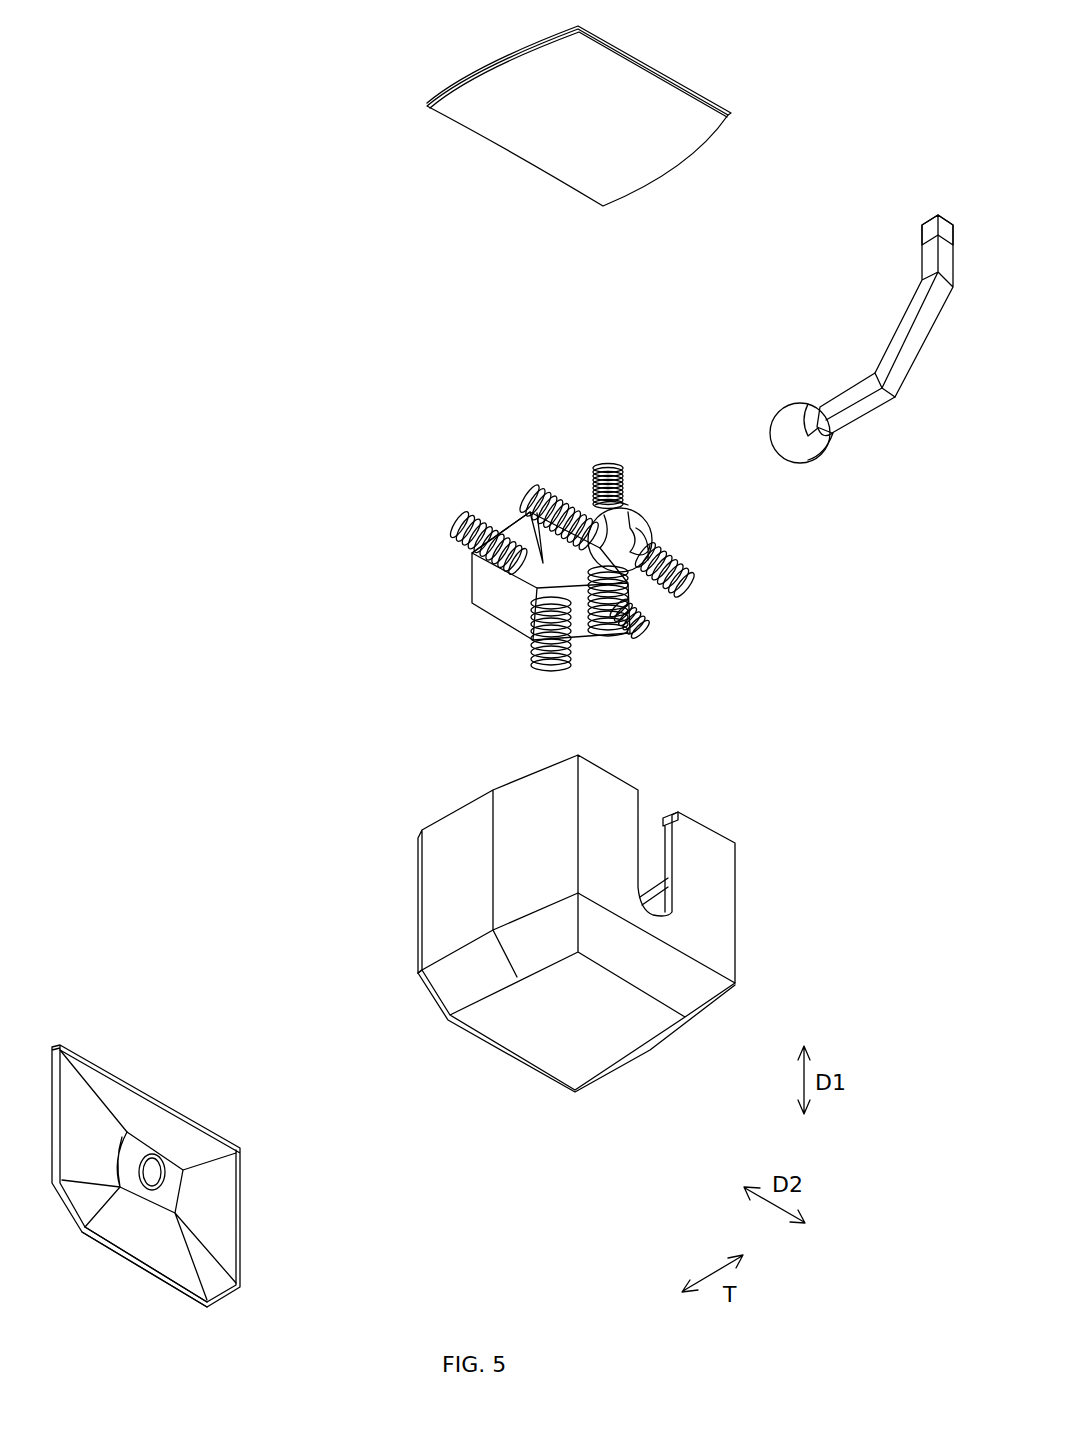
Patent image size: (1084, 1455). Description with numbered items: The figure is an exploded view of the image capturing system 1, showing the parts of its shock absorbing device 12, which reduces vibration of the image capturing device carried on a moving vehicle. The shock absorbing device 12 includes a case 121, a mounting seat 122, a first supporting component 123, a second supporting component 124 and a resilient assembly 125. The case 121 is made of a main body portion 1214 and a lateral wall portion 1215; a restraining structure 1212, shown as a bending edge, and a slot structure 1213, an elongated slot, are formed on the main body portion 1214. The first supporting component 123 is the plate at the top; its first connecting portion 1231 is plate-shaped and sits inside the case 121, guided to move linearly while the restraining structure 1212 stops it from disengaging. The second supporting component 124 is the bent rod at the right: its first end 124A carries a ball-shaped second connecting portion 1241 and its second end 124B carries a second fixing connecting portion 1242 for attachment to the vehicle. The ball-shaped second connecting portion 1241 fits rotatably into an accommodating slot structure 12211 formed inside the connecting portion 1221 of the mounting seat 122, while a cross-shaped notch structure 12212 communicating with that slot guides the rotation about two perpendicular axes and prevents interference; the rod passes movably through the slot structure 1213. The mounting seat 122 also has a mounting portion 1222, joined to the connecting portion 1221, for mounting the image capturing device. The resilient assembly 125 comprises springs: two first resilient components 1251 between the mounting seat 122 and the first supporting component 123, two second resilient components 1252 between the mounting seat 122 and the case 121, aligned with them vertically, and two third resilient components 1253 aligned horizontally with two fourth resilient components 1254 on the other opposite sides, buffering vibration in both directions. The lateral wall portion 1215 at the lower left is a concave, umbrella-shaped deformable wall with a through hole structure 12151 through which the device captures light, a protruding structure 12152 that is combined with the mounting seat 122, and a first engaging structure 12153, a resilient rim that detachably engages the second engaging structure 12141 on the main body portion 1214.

The image capturing system 1 is at (185, 62).
The shock absorbing device 12 is at (822, 733).
The case 121 is at (760, 922).
The restraining structure 1212 is at (665, 816).
The slot structure 1213 is at (664, 855).
The main body portion 1214 is at (612, 1084).
The second engaging structure 12141 is at (428, 1005).
The lateral wall portion 1215 is at (217, 1288).
The through hole structure 12151 is at (150, 1165).
The protruding structure 12152 is at (174, 1183).
The first engaging structure 12153 is at (130, 1257).
The mounting seat 122 is at (362, 565).
The connecting portion 1221 is at (488, 615).
The mounting portion 1222 is at (480, 582).
The accommodating slot structure 12211 is at (642, 523).
The notch structure 12212 is at (597, 513).
The first supporting component 123 is at (470, 42).
The first connecting portion 1231 is at (622, 82).
The second supporting component 124 is at (900, 335).
The first end of the second supporting component 124A is at (845, 462).
The second end of the second supporting component 124B is at (903, 245).
The second connecting portion 1241 is at (802, 440).
The second fixing connecting portion 1242 is at (930, 230).
The resilient assembly 125 is at (636, 442).
The first resilient component 1251 is at (608, 463).
The second resilient component 1252 is at (602, 637).
The third resilient component 1253 is at (482, 522).
The fourth resilient component 1254 is at (685, 587).